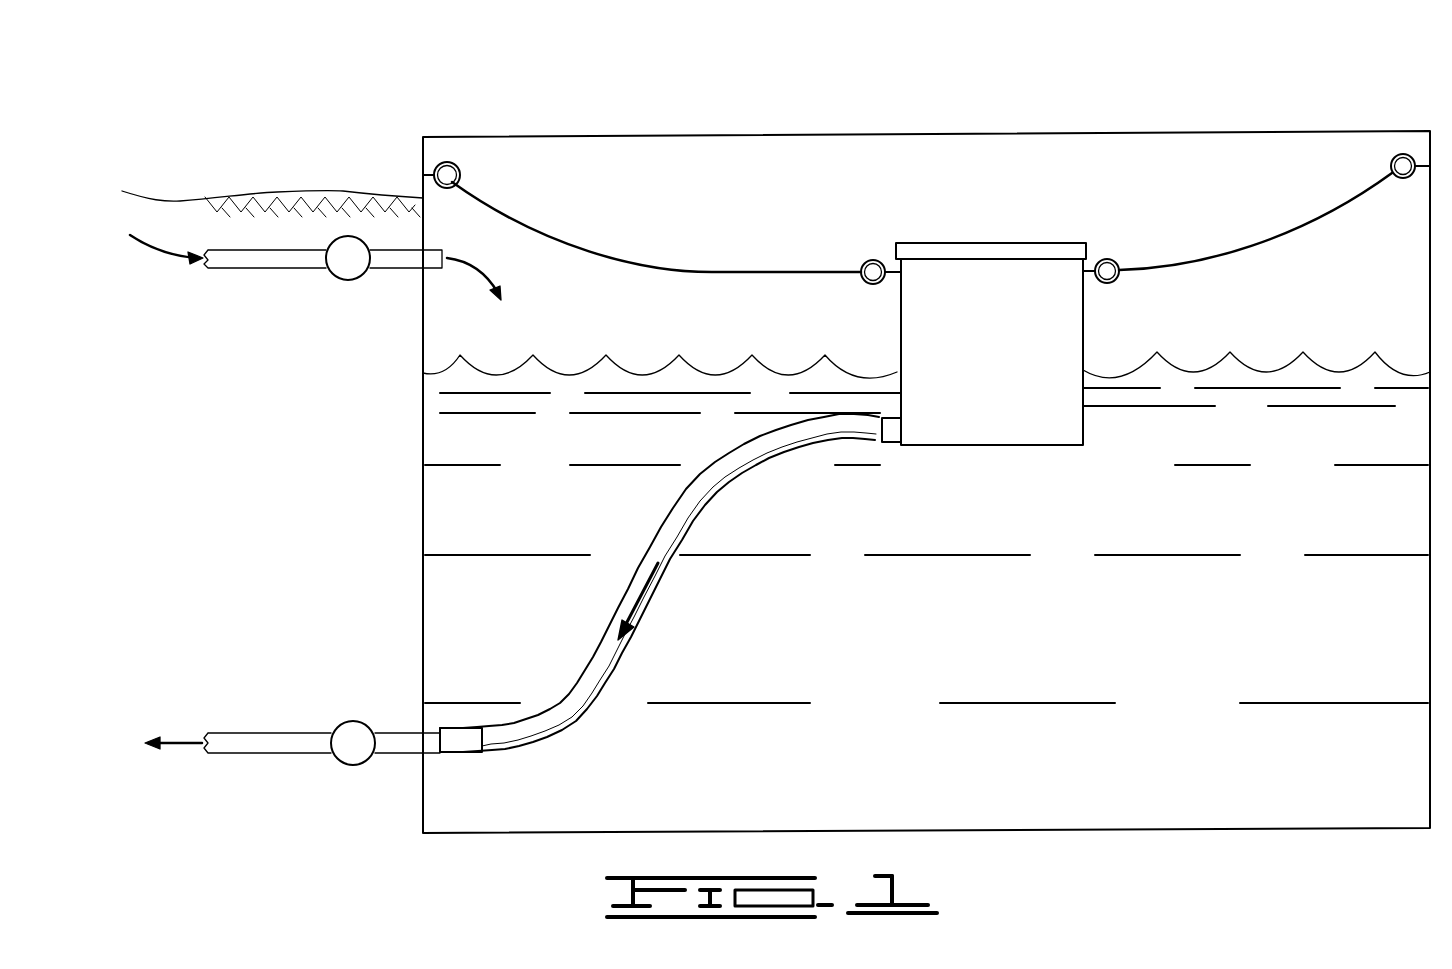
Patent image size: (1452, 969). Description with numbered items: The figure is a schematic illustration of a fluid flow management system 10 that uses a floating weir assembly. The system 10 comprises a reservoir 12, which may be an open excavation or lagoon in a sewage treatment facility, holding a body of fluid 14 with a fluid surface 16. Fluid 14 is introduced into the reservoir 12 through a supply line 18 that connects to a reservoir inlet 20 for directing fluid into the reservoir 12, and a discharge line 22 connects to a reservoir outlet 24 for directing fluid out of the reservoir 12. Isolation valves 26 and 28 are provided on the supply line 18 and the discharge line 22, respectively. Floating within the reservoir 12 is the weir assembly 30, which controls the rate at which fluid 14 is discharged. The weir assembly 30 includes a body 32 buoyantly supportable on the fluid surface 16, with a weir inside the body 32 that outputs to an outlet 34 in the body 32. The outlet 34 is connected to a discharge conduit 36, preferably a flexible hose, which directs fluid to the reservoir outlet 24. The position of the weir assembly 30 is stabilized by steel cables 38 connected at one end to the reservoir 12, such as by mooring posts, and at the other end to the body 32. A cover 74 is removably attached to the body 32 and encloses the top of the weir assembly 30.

The system 10 is at (714, 108).
The reservoir 12 is at (1208, 130).
The fluid 14 is at (460, 500).
The fluid surface 16 is at (493, 373).
The supply line 18 is at (238, 270).
The reservoir inlet 20 is at (397, 255).
The discharge line 22 is at (268, 755).
The reservoir outlet 24 is at (400, 740).
The isolation valve 26 is at (340, 272).
The isolation valve 28 is at (355, 765).
The weir assembly 30 is at (1021, 325).
The body 32 is at (1010, 300).
The outlet 34 is at (890, 432).
The discharge conduit 36 is at (662, 592).
The steel cables 38 is at (585, 242).
The cover 74 is at (948, 250).